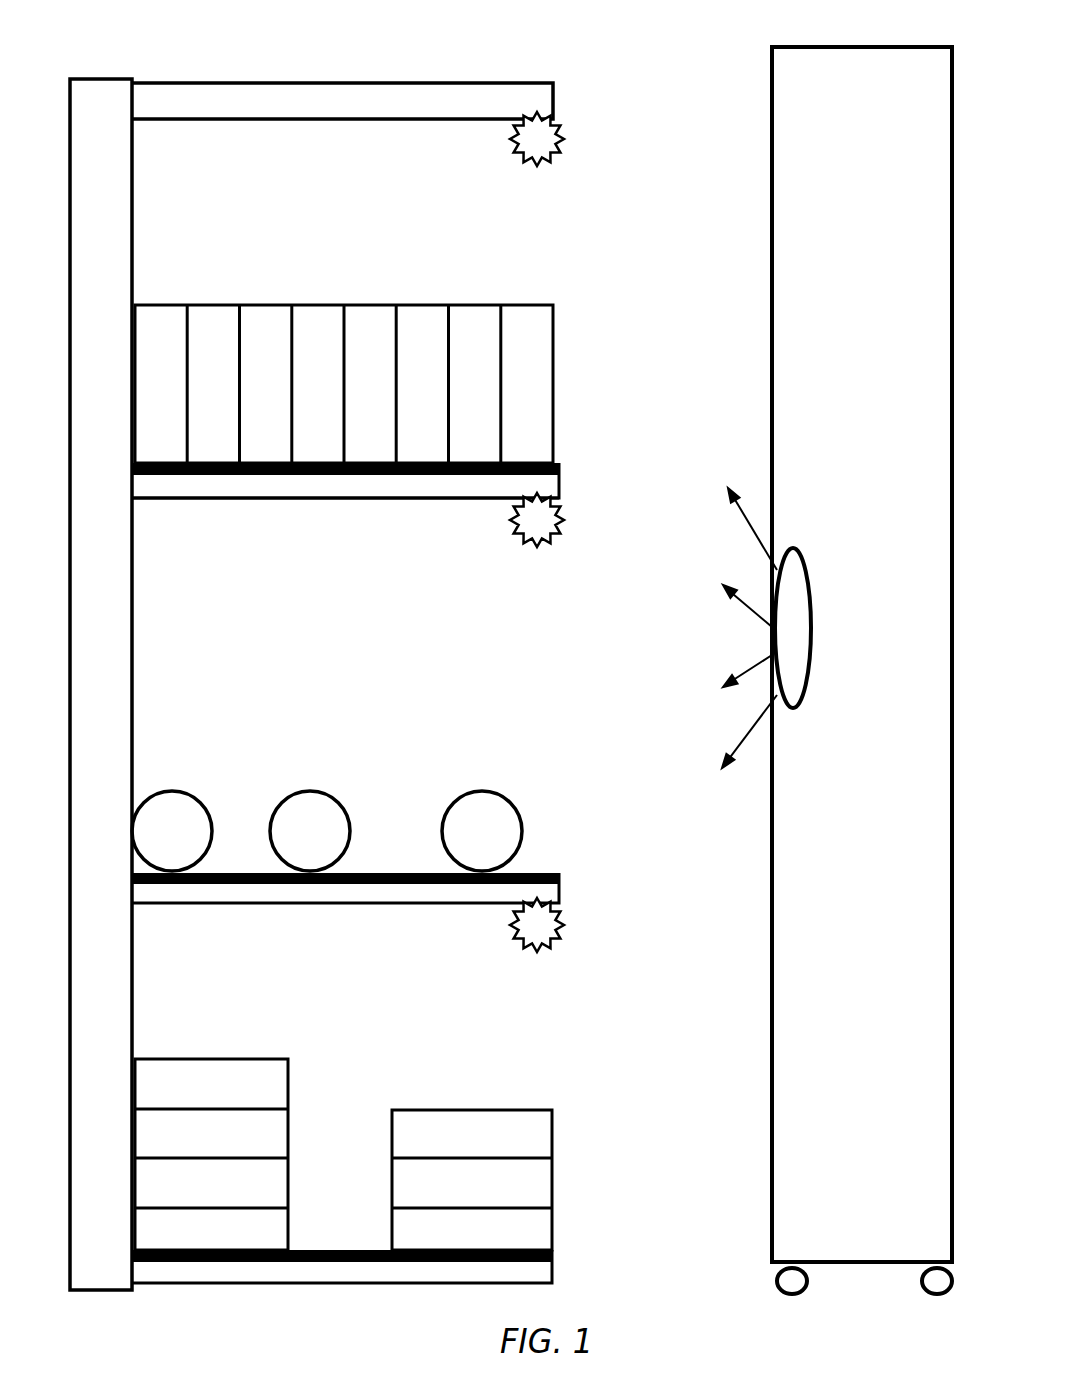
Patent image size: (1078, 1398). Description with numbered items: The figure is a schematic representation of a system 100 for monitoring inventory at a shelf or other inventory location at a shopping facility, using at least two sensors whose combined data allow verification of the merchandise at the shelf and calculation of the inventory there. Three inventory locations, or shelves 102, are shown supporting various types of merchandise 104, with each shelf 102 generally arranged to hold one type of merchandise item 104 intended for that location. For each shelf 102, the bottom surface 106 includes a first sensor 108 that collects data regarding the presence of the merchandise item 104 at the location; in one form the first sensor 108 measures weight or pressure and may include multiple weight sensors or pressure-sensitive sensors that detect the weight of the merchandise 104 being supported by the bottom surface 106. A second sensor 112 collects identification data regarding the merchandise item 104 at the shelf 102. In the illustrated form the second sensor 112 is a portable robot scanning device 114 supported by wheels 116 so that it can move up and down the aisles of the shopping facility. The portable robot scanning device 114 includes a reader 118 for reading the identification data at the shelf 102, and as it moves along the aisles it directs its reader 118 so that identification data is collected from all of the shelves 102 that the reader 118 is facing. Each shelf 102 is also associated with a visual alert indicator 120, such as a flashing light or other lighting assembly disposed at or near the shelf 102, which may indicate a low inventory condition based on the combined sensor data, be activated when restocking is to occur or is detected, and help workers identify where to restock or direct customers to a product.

The system 100 is at (136, 46).
The shelf 102 is at (472, 279).
The merchandise item 104 is at (157, 312).
The bottom surface 106 is at (282, 504).
The first sensor 108 is at (553, 462).
The second sensor 112 is at (716, 82).
The portable robot scanning device 114 is at (793, 240).
The wheels 116 is at (775, 1279).
The reader 118 is at (793, 638).
The visual alert indicator 120 is at (514, 147).